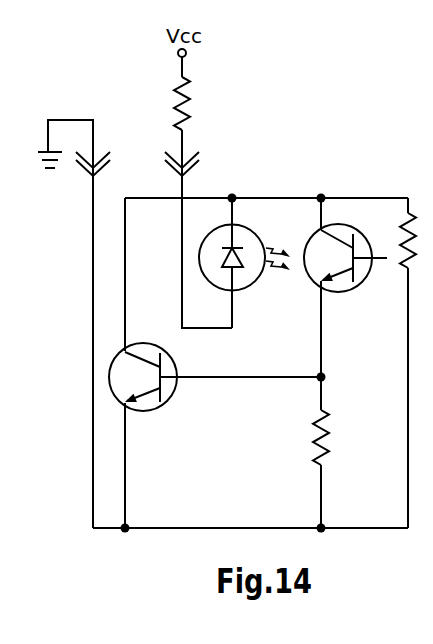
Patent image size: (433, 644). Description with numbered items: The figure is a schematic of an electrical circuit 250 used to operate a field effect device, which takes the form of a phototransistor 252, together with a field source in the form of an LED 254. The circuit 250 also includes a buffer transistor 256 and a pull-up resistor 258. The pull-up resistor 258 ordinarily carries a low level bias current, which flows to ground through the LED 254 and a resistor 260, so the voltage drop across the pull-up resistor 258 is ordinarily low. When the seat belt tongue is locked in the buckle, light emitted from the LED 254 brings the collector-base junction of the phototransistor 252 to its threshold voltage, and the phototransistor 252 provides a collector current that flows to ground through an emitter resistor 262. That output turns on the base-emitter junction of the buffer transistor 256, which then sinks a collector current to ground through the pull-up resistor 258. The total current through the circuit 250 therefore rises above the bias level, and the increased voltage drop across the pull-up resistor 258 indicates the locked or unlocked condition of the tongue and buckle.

The electrical circuit 250 is at (378, 115).
The phototransistor 252 is at (359, 280).
The LED 254 is at (256, 277).
The buffer transistor 256 is at (150, 410).
The pull-up resistor 258 is at (188, 100).
The resistor 260 is at (400, 233).
The emitter resistor 262 is at (328, 448).